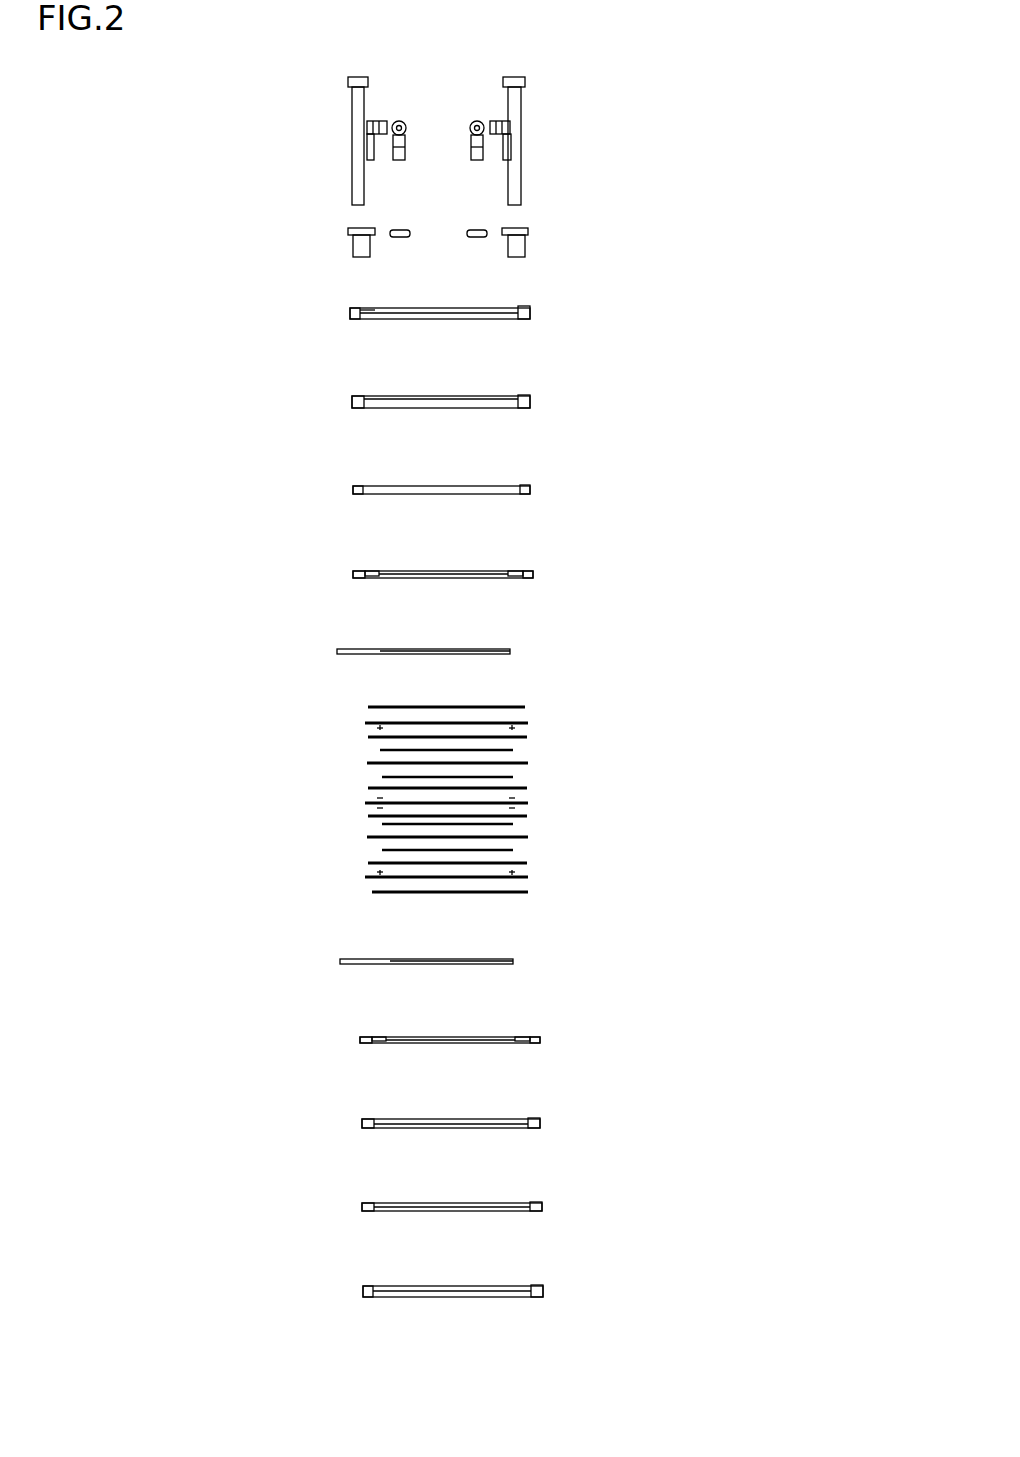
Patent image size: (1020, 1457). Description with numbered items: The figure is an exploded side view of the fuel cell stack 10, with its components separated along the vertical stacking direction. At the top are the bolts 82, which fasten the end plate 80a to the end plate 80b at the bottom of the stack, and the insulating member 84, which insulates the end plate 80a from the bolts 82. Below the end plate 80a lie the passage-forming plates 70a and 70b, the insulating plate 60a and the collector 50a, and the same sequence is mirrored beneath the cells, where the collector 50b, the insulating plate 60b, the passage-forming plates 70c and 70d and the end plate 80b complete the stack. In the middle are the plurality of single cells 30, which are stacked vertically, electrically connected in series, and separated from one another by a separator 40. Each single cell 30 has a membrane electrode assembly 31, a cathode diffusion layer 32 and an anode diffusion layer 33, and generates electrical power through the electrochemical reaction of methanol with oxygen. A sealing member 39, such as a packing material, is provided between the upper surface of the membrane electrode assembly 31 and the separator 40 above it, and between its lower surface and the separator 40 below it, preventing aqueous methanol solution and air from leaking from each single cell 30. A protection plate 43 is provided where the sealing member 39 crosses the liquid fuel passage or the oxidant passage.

The fuel cell stack 10 is at (471, 1358).
The single cell 30 is at (330, 722).
The membrane electrode assembly 31 is at (535, 763).
The cathode diffusion layer 32 is at (517, 750).
The anode diffusion layer 33 is at (517, 777).
The sealing member 39 is at (485, 707).
The separator 40 is at (535, 723).
The protection plate 43 is at (375, 723).
The collector 50a is at (515, 651).
The collector 50b is at (518, 961).
The insulating plate 60a is at (540, 573).
The insulating plate 60b is at (545, 1039).
The passage-forming plate 70a is at (538, 402).
The passage-forming plate 70b is at (538, 489).
The passage-forming plate 70c is at (545, 1122).
The passage-forming plate 70d is at (545, 1205).
The end plate 80a is at (538, 312).
The end plate 80b is at (548, 1290).
The bolt 82 is at (522, 133).
The insulating member 84 is at (528, 232).